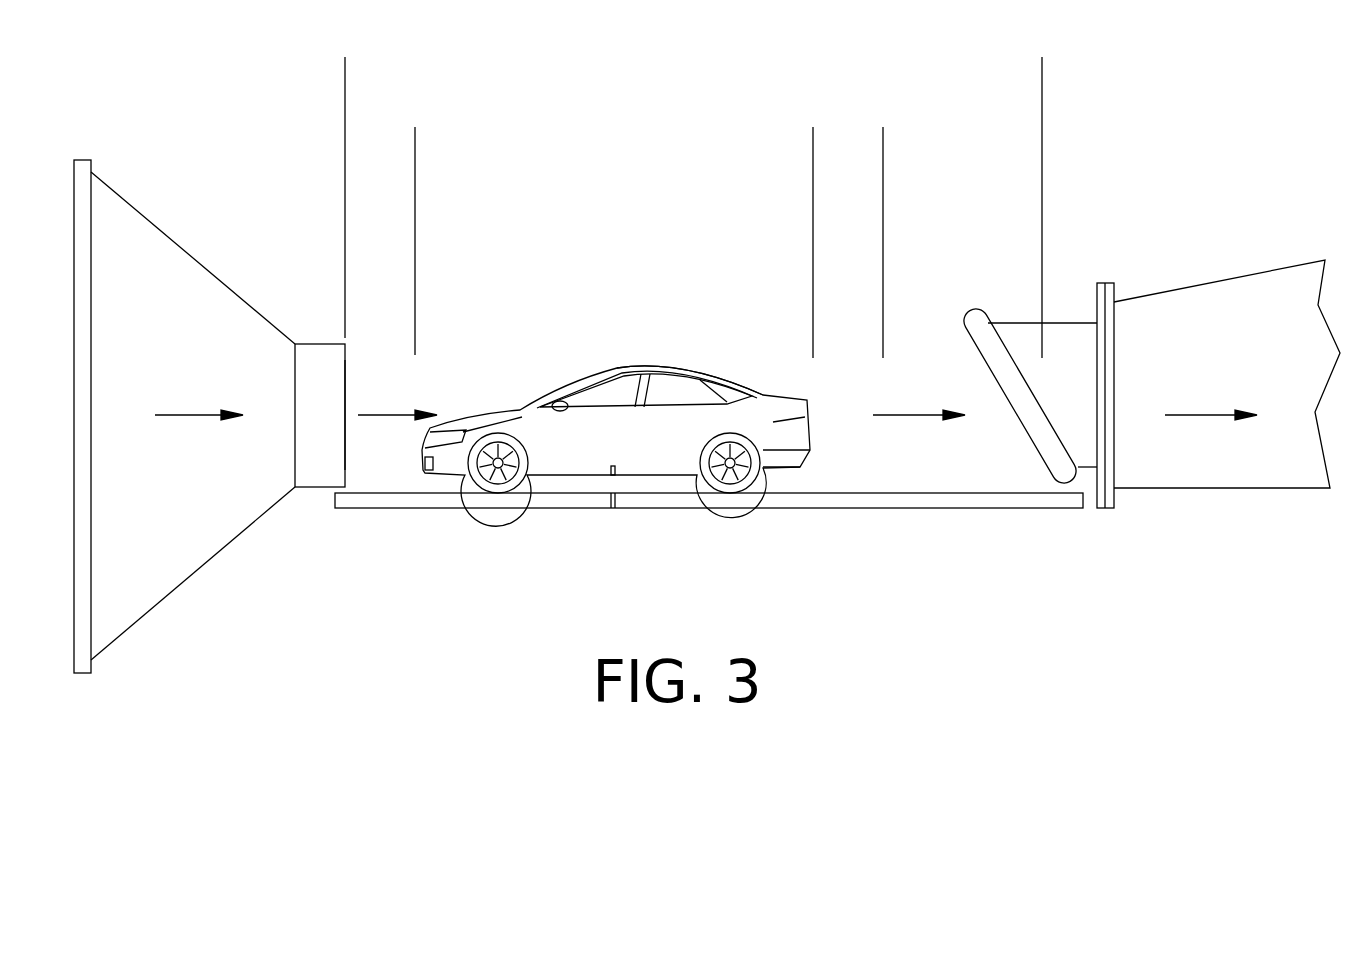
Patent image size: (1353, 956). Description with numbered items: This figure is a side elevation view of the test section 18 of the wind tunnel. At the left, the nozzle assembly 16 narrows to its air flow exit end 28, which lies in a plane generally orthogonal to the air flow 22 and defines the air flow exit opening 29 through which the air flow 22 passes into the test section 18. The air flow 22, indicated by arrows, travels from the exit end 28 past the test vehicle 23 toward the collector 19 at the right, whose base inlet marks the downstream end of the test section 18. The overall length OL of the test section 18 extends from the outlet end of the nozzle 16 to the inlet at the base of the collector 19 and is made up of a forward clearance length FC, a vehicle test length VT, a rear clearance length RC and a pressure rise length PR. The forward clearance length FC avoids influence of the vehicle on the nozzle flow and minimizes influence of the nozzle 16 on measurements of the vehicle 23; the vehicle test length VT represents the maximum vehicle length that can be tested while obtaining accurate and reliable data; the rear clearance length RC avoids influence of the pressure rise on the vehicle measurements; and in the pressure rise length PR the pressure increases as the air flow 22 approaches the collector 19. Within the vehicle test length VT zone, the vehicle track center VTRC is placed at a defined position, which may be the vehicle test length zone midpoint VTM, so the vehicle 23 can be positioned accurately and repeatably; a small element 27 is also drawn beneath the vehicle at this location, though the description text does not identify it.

The nozzle assembly 16 is at (216, 270).
The test section 18 is at (712, 352).
The collector 19 is at (1017, 312).
The air flow 22 is at (191, 414).
The test vehicle 23 is at (660, 368).
The sensor 27 is at (598, 500).
The air flow exit end 28 is at (347, 362).
The air flow exit opening 29 is at (354, 458).
The overall length OL is at (1025, 83).
The forward clearance length FC is at (345, 152).
The vehicle test length VT is at (813, 152).
The rear clearance length RC is at (813, 152).
The pressure rise length PR is at (1042, 152).
The vehicle track center VTRC is at (590, 466).
The vehicle test length zone midpoint VTM is at (617, 500).